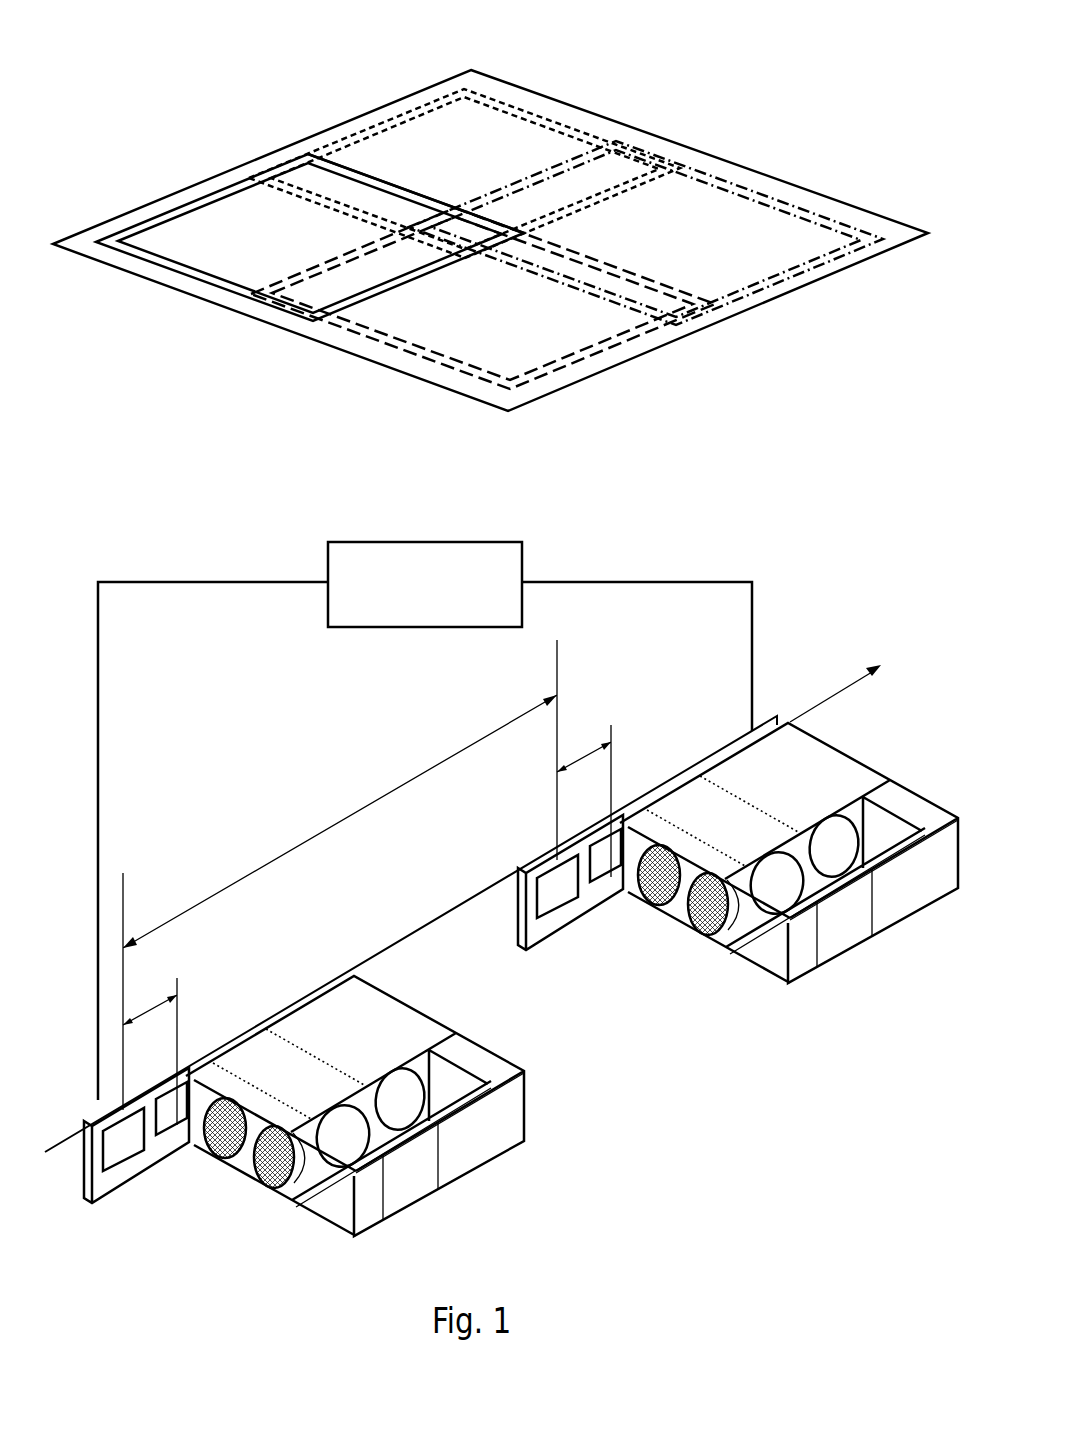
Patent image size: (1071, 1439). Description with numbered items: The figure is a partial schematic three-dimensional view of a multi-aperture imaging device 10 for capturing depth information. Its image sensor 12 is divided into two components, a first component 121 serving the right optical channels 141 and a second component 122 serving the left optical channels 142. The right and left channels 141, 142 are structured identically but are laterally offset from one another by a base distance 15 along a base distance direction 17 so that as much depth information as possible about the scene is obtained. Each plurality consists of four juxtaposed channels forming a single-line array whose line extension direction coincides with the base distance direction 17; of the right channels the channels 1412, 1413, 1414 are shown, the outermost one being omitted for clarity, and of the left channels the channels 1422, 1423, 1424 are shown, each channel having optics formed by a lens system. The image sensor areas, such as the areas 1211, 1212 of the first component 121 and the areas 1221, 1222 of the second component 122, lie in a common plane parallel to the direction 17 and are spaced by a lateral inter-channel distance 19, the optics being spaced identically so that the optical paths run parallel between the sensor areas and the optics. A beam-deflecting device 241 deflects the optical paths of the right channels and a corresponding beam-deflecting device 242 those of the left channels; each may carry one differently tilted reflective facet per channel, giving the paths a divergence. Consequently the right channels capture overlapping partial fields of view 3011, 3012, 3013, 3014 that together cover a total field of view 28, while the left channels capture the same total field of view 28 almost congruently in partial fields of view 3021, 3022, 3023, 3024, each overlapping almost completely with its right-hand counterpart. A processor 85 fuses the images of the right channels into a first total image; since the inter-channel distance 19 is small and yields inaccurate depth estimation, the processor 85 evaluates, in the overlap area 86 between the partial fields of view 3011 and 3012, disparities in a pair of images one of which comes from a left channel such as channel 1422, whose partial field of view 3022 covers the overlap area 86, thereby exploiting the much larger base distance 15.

The 3D multi-aperture imaging device 10 is at (922, 513).
The image sensor 12 is at (450, 868).
The first image sensor component 121 is at (231, 1063).
The second image sensor component 122 is at (534, 936).
The image sensor area 1211 is at (122, 1165).
The image sensor area 1212 is at (176, 1137).
The image sensor area 1221 is at (560, 905).
The image sensor area 1222 is at (607, 880).
The right optical channels 141 is at (382, 1111).
The left optical channels 142 is at (793, 852).
The right optical channel 1412 is at (272, 1112).
The right optical channel 1413 is at (330, 1082).
The right optical channel 1414 is at (361, 996).
The left optical channel 1422 is at (707, 856).
The left optical channel 1423 is at (760, 830).
The left optical channel 1424 is at (795, 743).
The base distance 15 is at (317, 833).
The base distance direction 17 is at (835, 692).
The inter-channel distance 19 is at (367, 922).
The beam-deflecting device 241 is at (391, 1176).
The beam-deflecting device 242 is at (824, 924).
The total field of view 28 is at (673, 137).
The partial field of view 3011 is at (187, 245).
The partial field of view 3012 is at (533, 147).
The partial field of view 3013 is at (533, 347).
The partial field of view 3014 is at (753, 230).
The partial field of view 3021 is at (217, 287).
The partial field of view 3022 is at (407, 117).
The partial field of view 3023 is at (387, 347).
The partial field of view 3024 is at (780, 275).
The processor 85 is at (428, 627).
The overlap area 86 is at (312, 182).